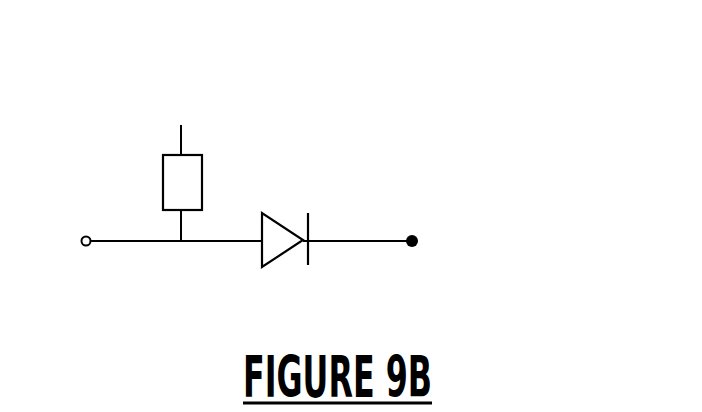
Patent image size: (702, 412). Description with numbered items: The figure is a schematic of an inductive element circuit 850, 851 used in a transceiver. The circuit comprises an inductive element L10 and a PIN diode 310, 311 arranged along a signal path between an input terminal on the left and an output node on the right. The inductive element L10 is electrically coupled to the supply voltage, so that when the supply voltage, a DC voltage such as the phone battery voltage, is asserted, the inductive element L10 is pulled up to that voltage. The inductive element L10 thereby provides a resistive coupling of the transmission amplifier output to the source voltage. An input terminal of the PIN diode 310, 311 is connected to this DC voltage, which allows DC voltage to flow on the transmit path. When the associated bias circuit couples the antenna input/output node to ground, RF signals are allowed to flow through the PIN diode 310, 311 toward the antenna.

The inductive element circuit 850 is at (250, 133).
The inductive element circuit 851 is at (250, 172).
The PIN diode 310 is at (337, 207).
The PIN diode 311 is at (273, 232).
The inductive element L10 is at (205, 183).